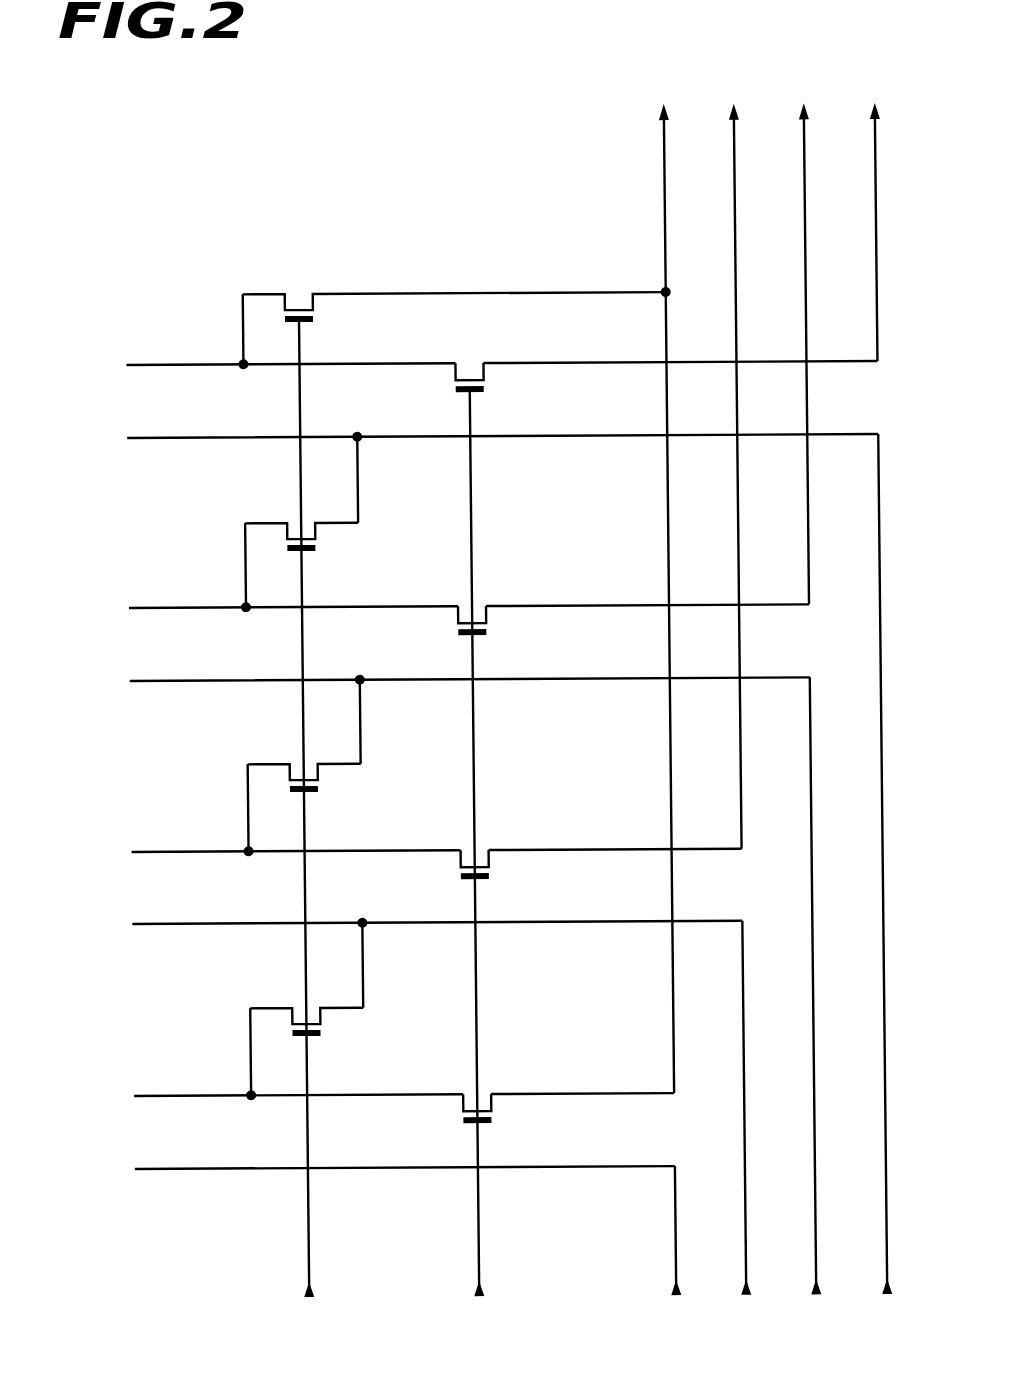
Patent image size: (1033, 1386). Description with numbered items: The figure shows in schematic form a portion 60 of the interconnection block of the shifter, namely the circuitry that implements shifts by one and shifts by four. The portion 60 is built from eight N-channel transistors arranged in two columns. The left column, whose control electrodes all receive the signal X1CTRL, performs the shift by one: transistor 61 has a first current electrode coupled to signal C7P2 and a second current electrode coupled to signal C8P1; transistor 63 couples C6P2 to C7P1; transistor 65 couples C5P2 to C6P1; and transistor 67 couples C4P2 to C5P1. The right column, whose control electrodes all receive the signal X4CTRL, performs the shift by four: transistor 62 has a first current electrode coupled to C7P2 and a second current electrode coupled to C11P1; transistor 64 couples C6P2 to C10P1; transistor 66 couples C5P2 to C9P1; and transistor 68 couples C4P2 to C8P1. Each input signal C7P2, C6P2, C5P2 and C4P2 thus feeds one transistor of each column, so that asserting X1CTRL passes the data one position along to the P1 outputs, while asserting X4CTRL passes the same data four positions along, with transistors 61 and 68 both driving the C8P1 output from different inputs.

The portion of interconnection block 60 is at (374, 96).
The N-channel transistor 61 is at (317, 302).
The N-channel transistor 62 is at (489, 373).
The N-channel transistor 63 is at (317, 531).
The N-channel transistor 64 is at (489, 616).
The N-channel transistor 65 is at (317, 772).
The N-channel transistor 66 is at (489, 860).
The N-channel transistor 67 is at (317, 1016).
The N-channel transistor 68 is at (489, 1104).